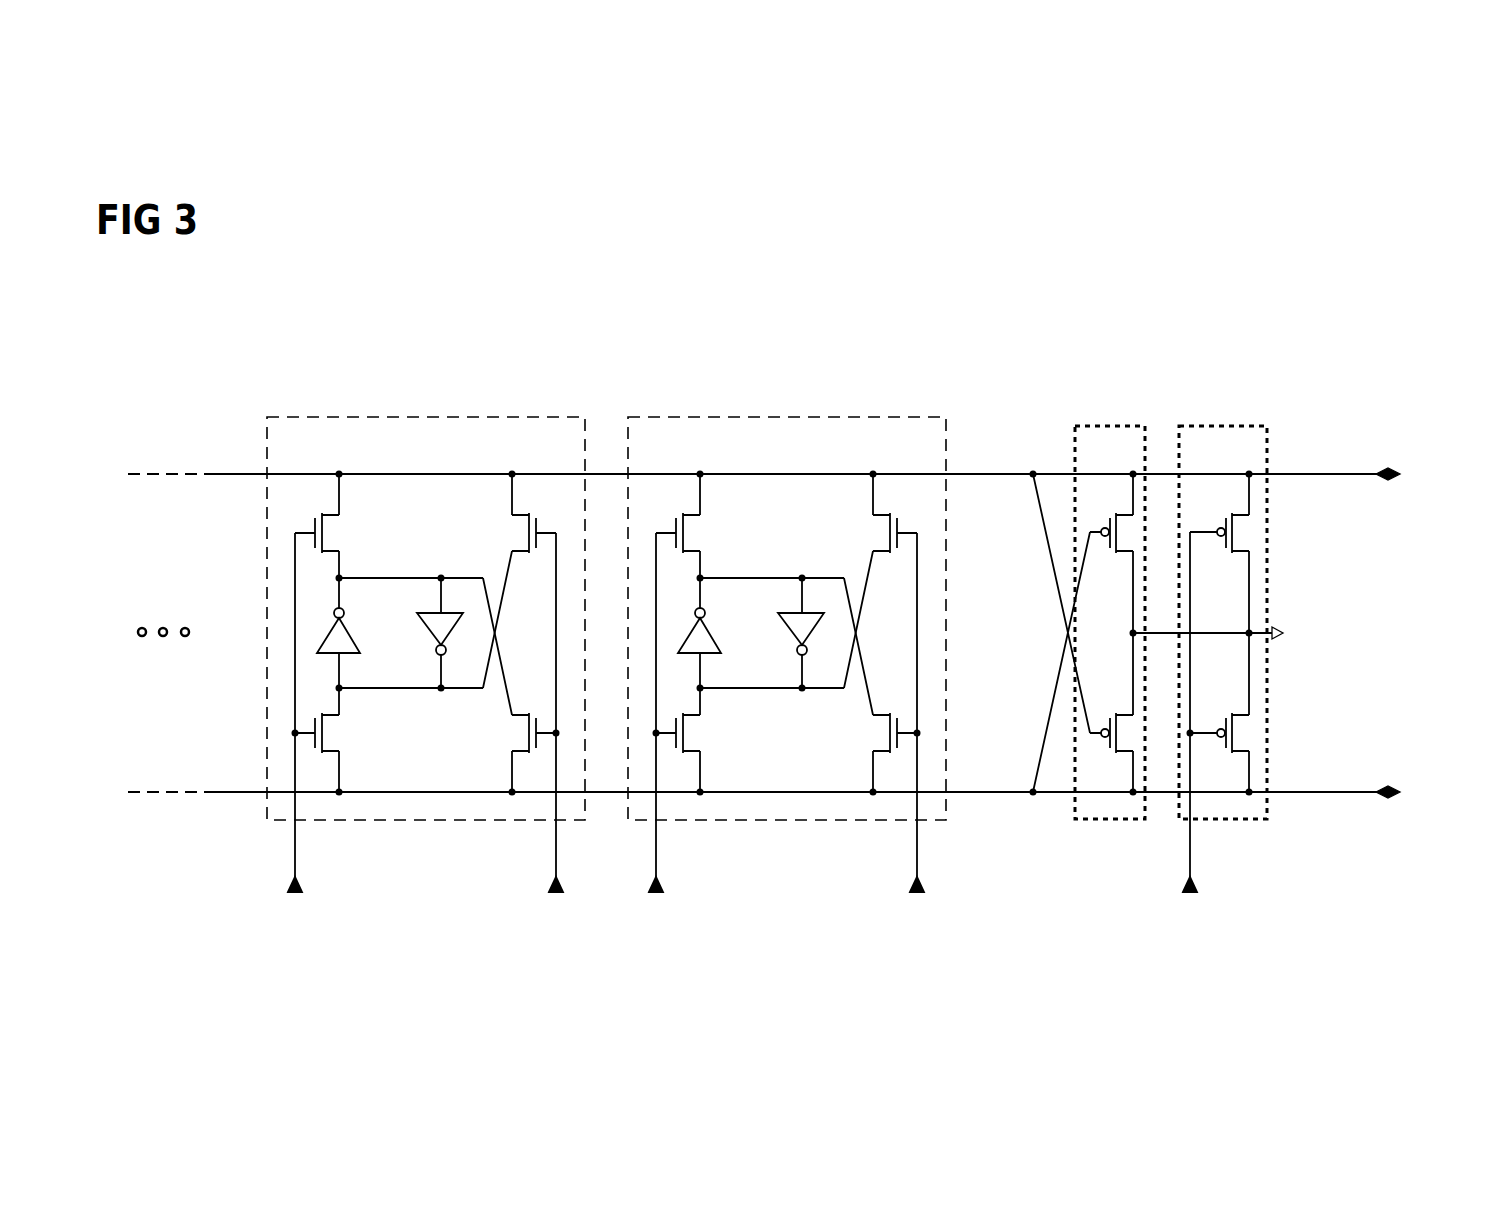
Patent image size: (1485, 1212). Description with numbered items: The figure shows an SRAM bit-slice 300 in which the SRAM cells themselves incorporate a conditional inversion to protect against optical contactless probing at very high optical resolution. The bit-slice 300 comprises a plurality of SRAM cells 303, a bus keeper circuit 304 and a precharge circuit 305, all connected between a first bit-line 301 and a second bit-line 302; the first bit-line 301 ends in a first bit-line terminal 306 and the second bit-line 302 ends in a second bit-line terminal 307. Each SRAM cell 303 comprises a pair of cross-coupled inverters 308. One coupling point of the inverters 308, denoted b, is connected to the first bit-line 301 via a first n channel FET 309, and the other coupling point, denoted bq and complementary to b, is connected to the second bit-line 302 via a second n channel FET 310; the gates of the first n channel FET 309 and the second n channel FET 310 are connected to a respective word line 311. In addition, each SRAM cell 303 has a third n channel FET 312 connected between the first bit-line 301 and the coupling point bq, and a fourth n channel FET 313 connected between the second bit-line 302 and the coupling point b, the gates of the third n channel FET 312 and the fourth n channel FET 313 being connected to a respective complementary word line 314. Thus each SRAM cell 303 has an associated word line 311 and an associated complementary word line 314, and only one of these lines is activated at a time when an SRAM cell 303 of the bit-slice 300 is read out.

The SRAM bit-slice 300 is at (1367, 258).
The first bit-line 301 is at (223, 474).
The second bit-line 302 is at (233, 792).
The SRAM cell 303 is at (508, 417).
The bus keeper circuit 304 is at (1100, 426).
The precharge circuit 305 is at (1230, 426).
The first bit-line terminal 306 is at (1340, 474).
The second bit-line terminal 307 is at (1347, 792).
The cross-coupled inverters 308 is at (333, 637).
The first n channel FET 309 is at (343, 532).
The second n channel FET 310 is at (343, 732).
The word line 311 is at (296, 856).
The third n channel FET 312 is at (539, 510).
The fourth n channel FET 313 is at (526, 710).
The complementary word line 314 is at (556, 843).